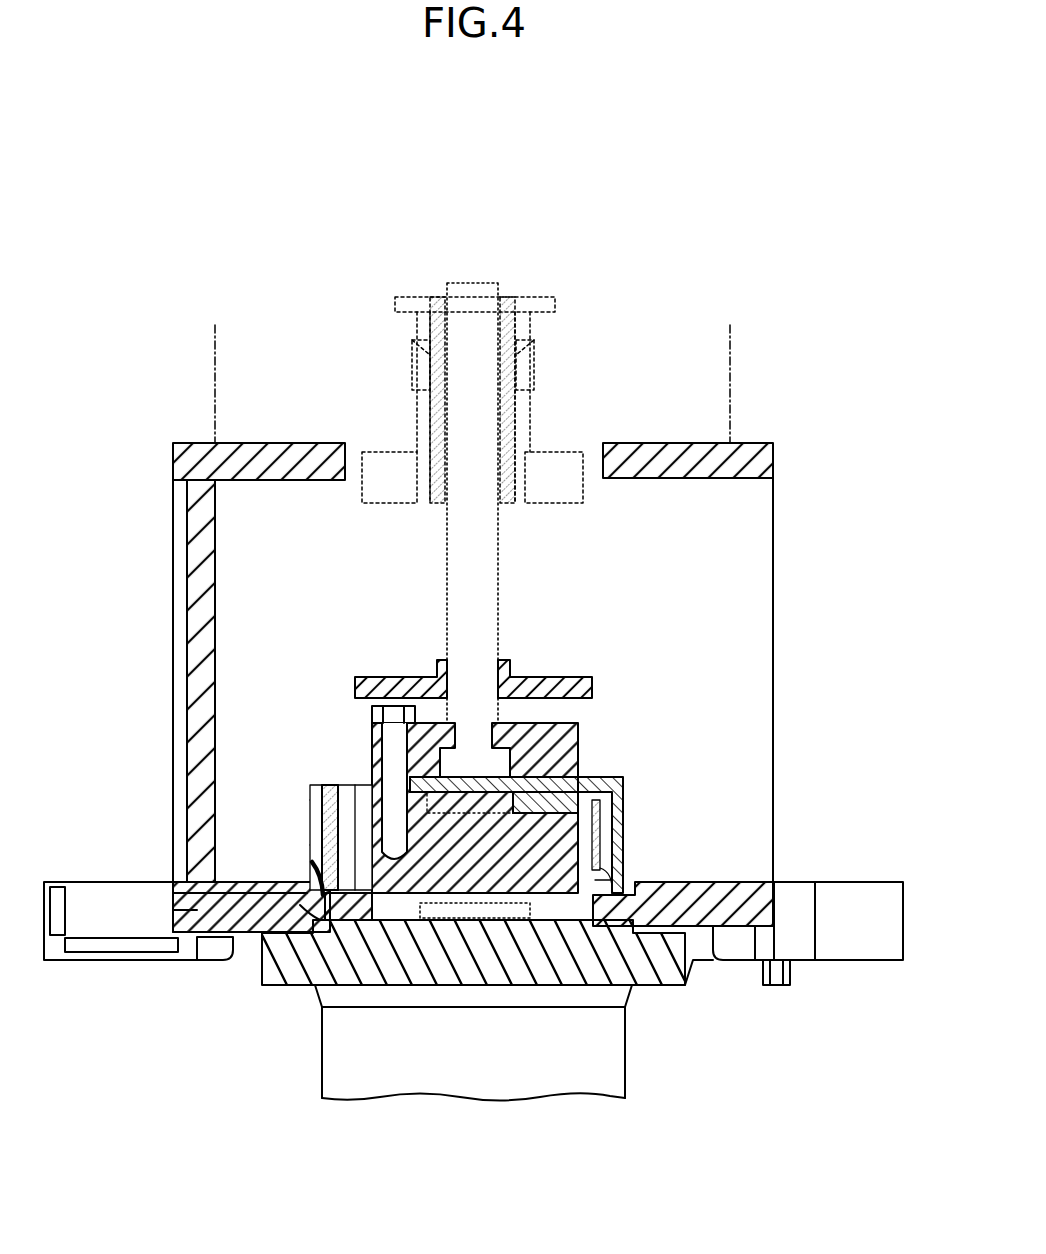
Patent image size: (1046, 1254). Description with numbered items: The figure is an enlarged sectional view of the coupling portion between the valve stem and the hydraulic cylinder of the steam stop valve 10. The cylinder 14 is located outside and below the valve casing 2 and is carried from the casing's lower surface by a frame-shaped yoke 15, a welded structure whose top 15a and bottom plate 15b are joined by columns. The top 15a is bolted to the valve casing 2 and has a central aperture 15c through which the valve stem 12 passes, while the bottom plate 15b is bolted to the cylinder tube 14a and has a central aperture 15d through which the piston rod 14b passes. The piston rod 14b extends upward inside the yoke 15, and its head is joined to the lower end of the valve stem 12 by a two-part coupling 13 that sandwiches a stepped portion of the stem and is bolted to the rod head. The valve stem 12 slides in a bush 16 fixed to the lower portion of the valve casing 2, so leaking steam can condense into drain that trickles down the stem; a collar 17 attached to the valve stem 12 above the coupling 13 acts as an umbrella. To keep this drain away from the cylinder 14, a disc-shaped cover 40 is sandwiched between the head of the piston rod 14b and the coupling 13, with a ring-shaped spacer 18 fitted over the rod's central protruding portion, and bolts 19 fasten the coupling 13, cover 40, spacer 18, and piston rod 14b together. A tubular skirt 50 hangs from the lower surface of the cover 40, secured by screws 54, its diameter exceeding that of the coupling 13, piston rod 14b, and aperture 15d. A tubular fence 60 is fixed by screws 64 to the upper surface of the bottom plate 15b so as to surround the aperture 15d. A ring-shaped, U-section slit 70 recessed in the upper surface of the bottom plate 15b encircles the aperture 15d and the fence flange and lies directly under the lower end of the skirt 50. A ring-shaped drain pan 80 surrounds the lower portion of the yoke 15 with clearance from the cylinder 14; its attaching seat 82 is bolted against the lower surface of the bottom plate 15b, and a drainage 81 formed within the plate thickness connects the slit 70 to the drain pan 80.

The valve casing 2 is at (213, 372).
The steam stop valve 10 is at (783, 333).
The valve stem 12 is at (498, 581).
The coupling 13 is at (578, 735).
The cylinder 14 is at (471, 1009).
The cylinder tube 14a is at (630, 1040).
The piston rod 14b is at (372, 844).
The yoke 15 is at (448, 667).
The top 15a is at (280, 443).
The bottom plate 15b is at (715, 882).
The aperture 15c is at (603, 460).
The aperture 15d is at (358, 903).
The bush 16 is at (553, 300).
The collar 17 is at (592, 684).
The spacer 18 is at (372, 800).
The bolts 19 is at (372, 715).
The cover 40 is at (596, 767).
The skirt 50 is at (625, 808).
The screws 54 is at (335, 778).
The fence 60 is at (605, 835).
The screws 64 is at (612, 885).
The slit 70 is at (312, 862).
The drain pan 80 is at (905, 920).
The drainage 81 is at (250, 882).
The attaching seat 82 is at (730, 962).